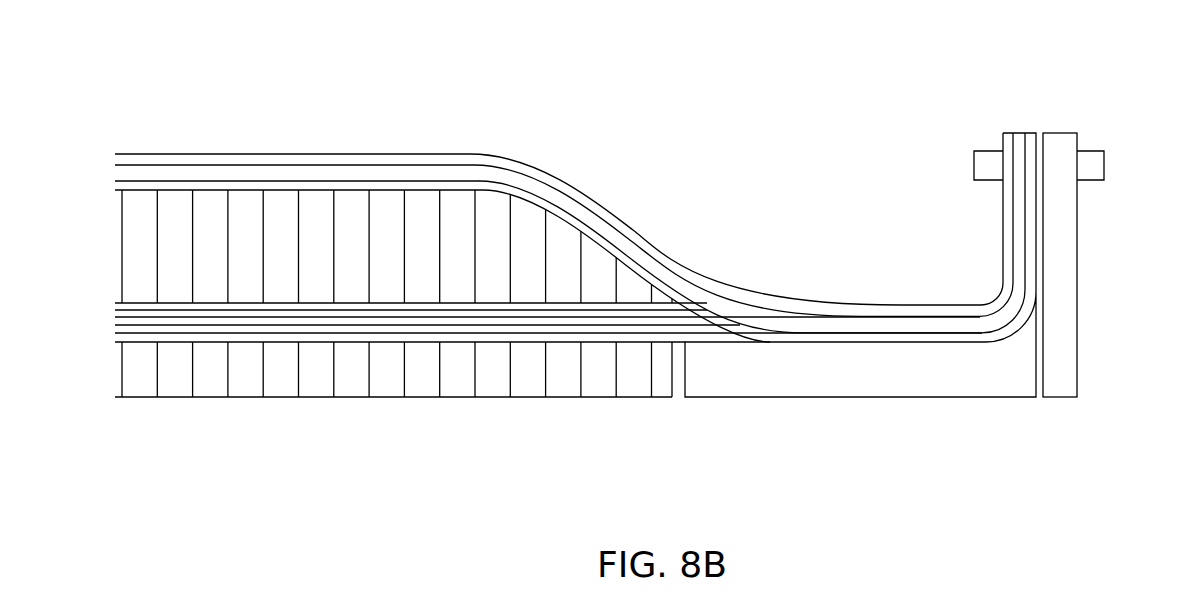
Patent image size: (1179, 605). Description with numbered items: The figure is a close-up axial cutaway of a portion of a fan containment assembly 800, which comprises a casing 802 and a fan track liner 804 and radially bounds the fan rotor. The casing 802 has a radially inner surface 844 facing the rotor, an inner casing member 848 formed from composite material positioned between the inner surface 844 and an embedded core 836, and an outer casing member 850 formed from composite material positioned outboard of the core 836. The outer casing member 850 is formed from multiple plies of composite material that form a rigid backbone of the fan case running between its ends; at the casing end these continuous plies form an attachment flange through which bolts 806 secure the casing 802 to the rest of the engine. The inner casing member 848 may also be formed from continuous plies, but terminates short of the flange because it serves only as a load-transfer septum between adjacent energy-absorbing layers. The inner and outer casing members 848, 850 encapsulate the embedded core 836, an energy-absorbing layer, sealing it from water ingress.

The containment assembly 800 is at (183, 93).
The casing 802 is at (665, 192).
The fan track liner 804 is at (369, 378).
The bolts 806 is at (1105, 151).
The embedded core 836 is at (333, 266).
The radially inner surface 844 is at (633, 343).
The inner casing member 848 is at (690, 317).
The outer casing member 850 is at (377, 172).